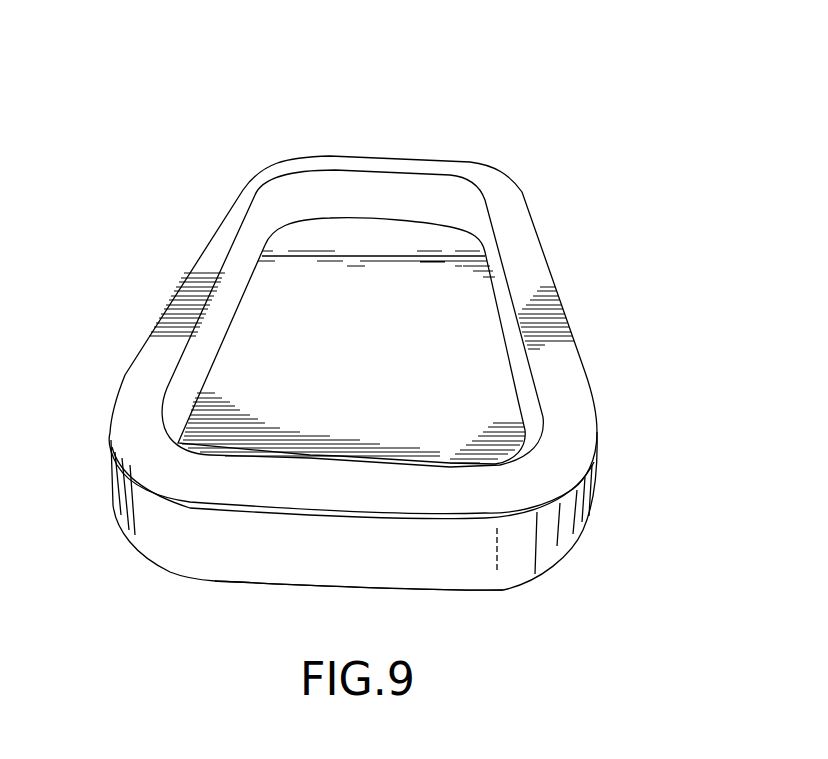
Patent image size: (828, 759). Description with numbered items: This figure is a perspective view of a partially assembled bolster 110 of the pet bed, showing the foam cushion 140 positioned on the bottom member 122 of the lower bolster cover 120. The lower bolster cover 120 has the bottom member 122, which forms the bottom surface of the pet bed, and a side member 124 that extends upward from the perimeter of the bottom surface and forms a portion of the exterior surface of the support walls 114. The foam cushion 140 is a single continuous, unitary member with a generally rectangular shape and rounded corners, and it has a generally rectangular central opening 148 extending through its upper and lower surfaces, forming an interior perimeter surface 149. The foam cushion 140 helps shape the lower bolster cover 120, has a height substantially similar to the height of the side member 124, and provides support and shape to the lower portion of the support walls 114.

The bolster 110 is at (221, 93).
The support walls 114 is at (485, 572).
The lower bolster cover 120 is at (322, 563).
The bottom member 122 is at (333, 325).
The side member 124 is at (400, 573).
The foam cushion 140 is at (448, 208).
The central opening 148 is at (274, 317).
The interior perimeter surface 149 is at (197, 362).